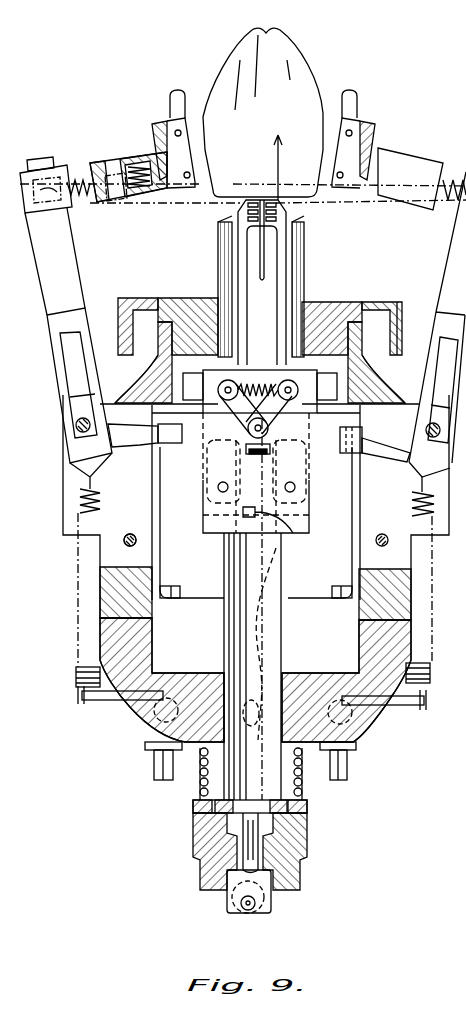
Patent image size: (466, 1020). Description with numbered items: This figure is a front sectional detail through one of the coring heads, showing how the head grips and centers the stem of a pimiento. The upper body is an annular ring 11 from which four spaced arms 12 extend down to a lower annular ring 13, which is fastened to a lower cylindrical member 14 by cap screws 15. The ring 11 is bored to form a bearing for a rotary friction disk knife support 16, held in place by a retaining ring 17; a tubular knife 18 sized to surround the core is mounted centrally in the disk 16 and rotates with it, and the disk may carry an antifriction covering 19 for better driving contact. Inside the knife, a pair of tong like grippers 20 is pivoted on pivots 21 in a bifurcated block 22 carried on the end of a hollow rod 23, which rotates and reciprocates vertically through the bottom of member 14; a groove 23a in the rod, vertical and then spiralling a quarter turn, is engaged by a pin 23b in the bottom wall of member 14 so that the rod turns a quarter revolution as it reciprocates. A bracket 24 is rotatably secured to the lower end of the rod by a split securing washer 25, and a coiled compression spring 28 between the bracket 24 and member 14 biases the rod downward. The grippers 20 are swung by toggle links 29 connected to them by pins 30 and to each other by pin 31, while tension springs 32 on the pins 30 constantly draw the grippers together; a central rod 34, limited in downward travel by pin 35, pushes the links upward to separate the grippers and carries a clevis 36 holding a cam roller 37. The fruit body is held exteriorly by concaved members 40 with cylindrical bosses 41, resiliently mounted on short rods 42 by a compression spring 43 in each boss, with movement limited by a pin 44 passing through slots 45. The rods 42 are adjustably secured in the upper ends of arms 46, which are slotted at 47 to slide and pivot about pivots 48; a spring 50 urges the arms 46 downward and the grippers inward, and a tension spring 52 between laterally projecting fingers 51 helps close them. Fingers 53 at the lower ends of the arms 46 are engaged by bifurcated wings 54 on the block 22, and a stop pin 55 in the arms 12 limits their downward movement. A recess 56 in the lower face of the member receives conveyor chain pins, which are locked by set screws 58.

The annular ring 11 is at (388, 390).
The spaced arms 12 is at (190, 530).
The lower annular ring 13 is at (300, 604).
The lower cylindrical member 14 is at (400, 660).
The cap screws 15 is at (180, 592).
The rotary friction disk knife support 16 is at (330, 302).
The retaining ring 17 is at (360, 412).
The tubular knife 18 is at (306, 246).
The antifriction covering 19 is at (403, 312).
The tong like grippers 20 is at (233, 268).
The pivots 21 is at (225, 480).
The bifurcated block 22 is at (203, 480).
The hollow rod 23 is at (283, 660).
The groove 23a is at (246, 640).
The pin 23b is at (380, 745).
The bracket 24 is at (300, 848).
The split securing washer 25 is at (308, 812).
The coiled compression spring 28 is at (200, 790).
The toggle links 29 is at (232, 422).
The pins 30 is at (160, 407).
The pin 31 is at (270, 446).
The tension springs 32 is at (258, 380).
The rod 34 is at (248, 540).
The pin 35 is at (295, 533).
The clevis 36 is at (272, 903).
The cam roller 37 is at (252, 912).
The concaved members 40 is at (170, 128).
The cylindrical bosses 41 is at (130, 155).
The short rods 42 is at (90, 165).
The compression spring 43 is at (150, 192).
The pin 44 is at (110, 150).
The slots 45 is at (118, 203).
The arms 46 is at (66, 280).
The slot 47 is at (70, 368).
The pivots 48 is at (77, 428).
The spring 50 is at (80, 500).
The laterally projecting fingers 51 is at (43, 170).
The tension spring 52 is at (444, 205).
The fingers 53 is at (148, 448).
The bifurcated wings 54 is at (176, 445).
The stop pin 55 is at (130, 536).
The recess 56 is at (160, 715).
The set screws 58 is at (153, 765).